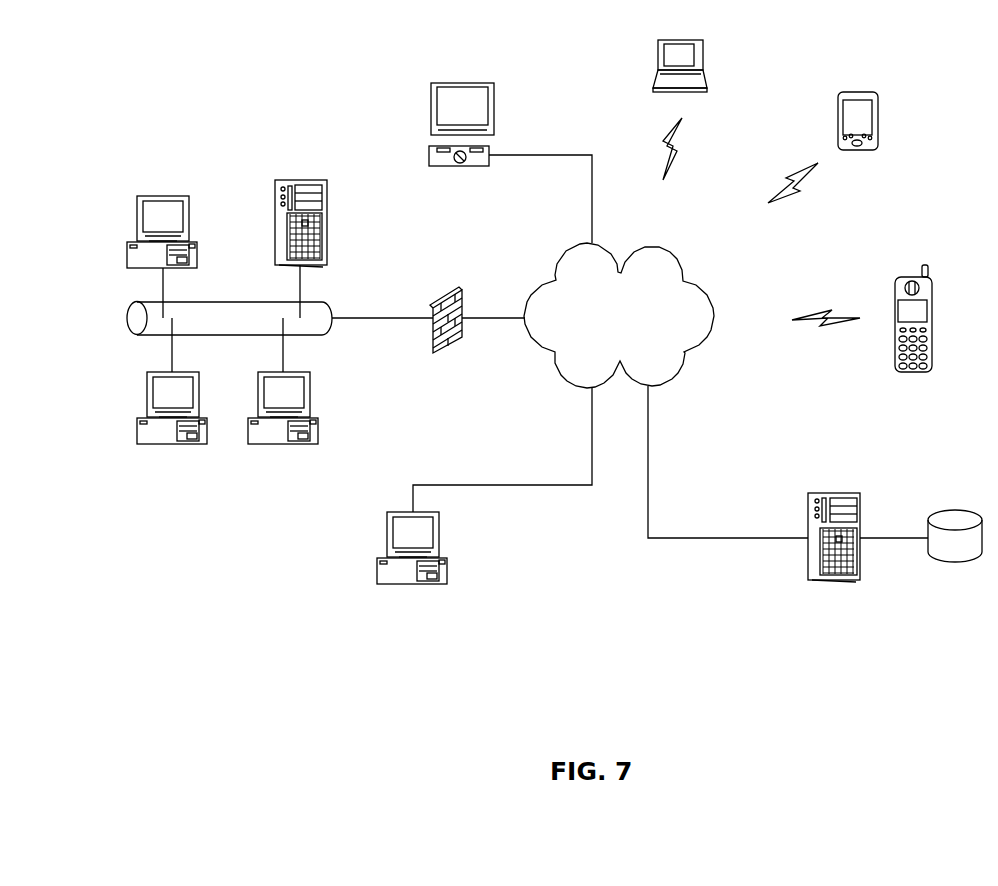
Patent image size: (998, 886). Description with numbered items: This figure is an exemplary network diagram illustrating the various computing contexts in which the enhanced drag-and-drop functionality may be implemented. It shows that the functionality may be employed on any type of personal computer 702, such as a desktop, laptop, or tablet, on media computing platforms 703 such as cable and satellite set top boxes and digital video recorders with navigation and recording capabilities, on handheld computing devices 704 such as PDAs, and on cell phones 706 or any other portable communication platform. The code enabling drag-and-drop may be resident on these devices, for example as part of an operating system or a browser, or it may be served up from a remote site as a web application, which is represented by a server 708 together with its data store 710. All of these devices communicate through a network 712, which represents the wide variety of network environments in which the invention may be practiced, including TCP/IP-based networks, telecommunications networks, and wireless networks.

The personal computer 702 is at (381, 294).
The media computing platform 703 is at (421, 124).
The handheld computing device 704 is at (820, 102).
The cell phone 706 is at (874, 309).
The server 708 is at (798, 519).
The data store 710 is at (927, 518).
The network 712 is at (598, 305).